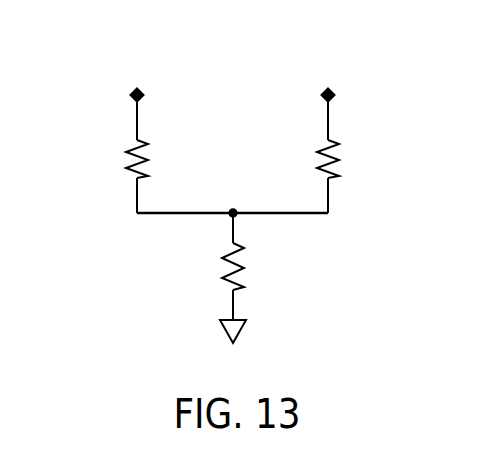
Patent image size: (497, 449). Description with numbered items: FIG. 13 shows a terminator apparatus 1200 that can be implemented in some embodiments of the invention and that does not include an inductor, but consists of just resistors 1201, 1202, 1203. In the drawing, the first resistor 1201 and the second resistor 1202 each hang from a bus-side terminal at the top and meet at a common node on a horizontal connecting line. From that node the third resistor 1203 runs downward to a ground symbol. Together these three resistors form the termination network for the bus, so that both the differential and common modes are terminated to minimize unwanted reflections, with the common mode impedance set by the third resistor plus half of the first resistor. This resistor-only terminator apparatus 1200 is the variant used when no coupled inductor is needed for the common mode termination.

The terminator apparatus 1200 is at (140, 37).
The resistor 1201 is at (100, 143).
The resistor 1202 is at (364, 143).
The resistor 1203 is at (267, 259).